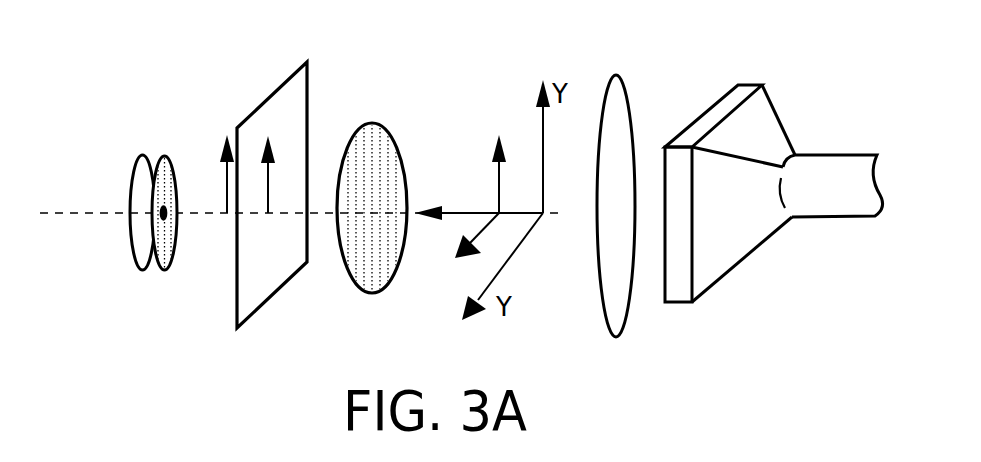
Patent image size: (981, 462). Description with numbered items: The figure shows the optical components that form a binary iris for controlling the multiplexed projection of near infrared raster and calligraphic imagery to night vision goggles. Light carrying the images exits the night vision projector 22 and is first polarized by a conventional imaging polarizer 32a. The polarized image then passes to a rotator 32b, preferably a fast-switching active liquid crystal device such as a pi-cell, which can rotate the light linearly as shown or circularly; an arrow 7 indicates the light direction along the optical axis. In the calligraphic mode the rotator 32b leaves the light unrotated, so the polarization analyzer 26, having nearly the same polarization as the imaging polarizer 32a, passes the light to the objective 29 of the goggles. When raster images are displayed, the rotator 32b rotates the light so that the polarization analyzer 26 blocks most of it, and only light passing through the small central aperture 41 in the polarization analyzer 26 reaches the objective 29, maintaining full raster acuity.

The night vision projector 22 is at (848, 333).
The polarization analyzer 26 is at (172, 268).
The objective 29 is at (131, 252).
The imaging polarizer 32a is at (375, 123).
The rotator 32b is at (307, 63).
The aperture 41 is at (165, 210).
The light beam direction 7 is at (479, 199).